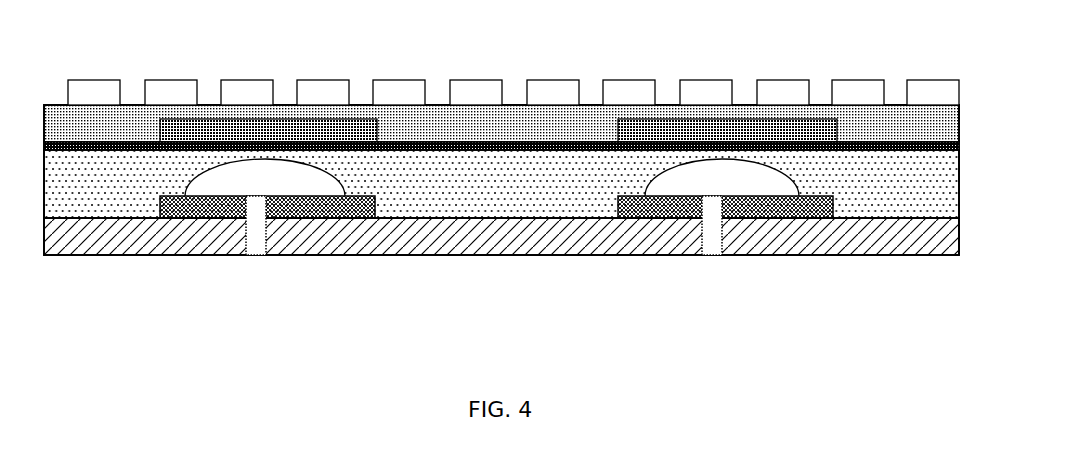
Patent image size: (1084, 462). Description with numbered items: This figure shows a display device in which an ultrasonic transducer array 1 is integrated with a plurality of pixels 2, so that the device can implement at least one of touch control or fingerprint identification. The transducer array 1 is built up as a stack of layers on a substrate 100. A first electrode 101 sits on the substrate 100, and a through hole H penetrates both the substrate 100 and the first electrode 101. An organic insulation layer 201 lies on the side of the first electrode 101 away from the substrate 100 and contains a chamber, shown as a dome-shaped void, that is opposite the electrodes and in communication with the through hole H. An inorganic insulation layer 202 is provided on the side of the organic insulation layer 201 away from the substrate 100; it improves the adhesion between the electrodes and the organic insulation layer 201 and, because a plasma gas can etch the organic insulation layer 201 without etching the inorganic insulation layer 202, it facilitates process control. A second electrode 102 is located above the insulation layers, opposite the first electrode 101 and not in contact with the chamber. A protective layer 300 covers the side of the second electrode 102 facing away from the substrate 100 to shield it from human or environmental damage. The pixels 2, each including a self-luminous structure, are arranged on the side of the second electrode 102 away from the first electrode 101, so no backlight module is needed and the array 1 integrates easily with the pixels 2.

The ultrasonic transducer array 1 is at (524, 365).
The pixel 2 is at (555, 97).
The substrate 100 is at (103, 233).
The first electrode 101 is at (180, 203).
The second electrode 102 is at (333, 128).
The organic insulation layer 201 is at (418, 198).
The inorganic insulation layer 202 is at (104, 146).
The protective layer 300 is at (433, 118).
The through hole H is at (250, 255).